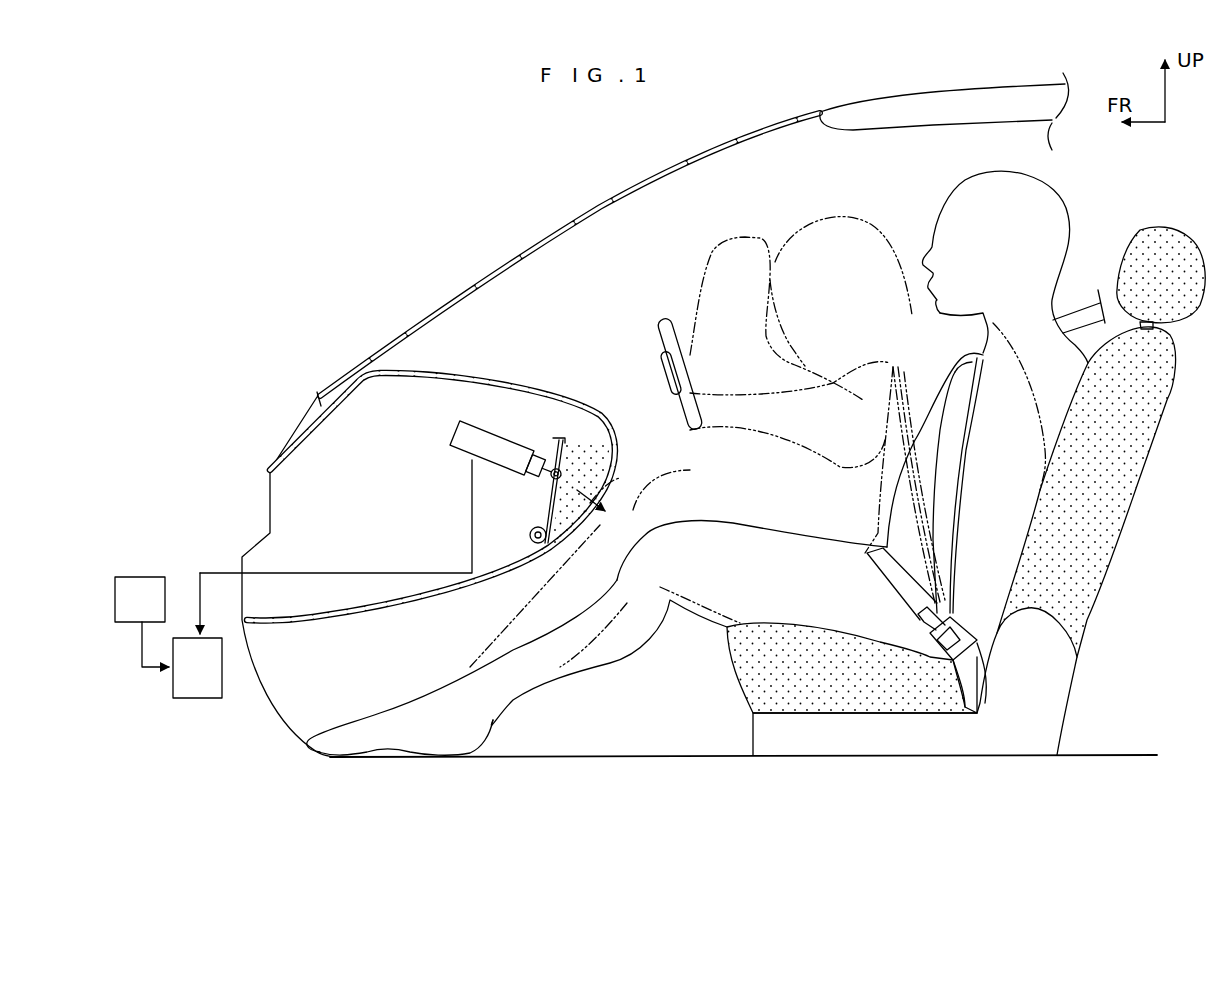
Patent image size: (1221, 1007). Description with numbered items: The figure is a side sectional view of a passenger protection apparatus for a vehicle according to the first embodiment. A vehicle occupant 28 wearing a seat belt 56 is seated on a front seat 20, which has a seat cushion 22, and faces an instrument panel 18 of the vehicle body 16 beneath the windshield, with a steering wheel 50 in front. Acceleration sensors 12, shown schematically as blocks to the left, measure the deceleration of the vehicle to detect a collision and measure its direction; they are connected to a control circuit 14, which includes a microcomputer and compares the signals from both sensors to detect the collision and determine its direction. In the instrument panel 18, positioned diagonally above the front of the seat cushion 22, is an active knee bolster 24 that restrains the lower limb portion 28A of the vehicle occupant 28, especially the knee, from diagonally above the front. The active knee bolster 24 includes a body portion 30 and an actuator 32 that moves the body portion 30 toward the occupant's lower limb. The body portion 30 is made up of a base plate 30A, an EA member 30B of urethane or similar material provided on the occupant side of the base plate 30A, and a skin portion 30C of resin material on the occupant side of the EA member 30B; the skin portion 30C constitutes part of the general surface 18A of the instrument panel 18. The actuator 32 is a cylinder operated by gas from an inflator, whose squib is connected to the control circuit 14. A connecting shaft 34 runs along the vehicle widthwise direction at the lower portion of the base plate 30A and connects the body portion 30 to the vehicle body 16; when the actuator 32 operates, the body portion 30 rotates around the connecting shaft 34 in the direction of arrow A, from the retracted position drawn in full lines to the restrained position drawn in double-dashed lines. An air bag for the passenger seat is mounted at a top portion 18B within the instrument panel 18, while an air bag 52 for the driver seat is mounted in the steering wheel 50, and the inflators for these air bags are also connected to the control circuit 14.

The acceleration sensor 12 is at (137, 577).
The control circuit 14 is at (212, 699).
The vehicle body 16 is at (673, 161).
The instrument panel 18 is at (452, 378).
The general surface of the instrument panel 18A is at (623, 478).
The top portion of the instrument panel 18B is at (545, 386).
The front seat 20 is at (1140, 486).
The seat cushion 22 is at (937, 701).
The active knee bolster 24 is at (614, 355).
The vehicle occupant 28 is at (930, 196).
The left lower limb portion 28A is at (635, 505).
The body portion 30 is at (583, 437).
The base plate 30A is at (556, 489).
The EA member 30B is at (560, 513).
The skin portion 30C is at (580, 546).
The actuator 32 is at (512, 444).
The connecting shaft 34 is at (531, 545).
The steering wheel 50 is at (676, 311).
The air bag 52 is at (751, 234).
The seat belt 56 is at (950, 498).
The arrow A direction A is at (598, 505).